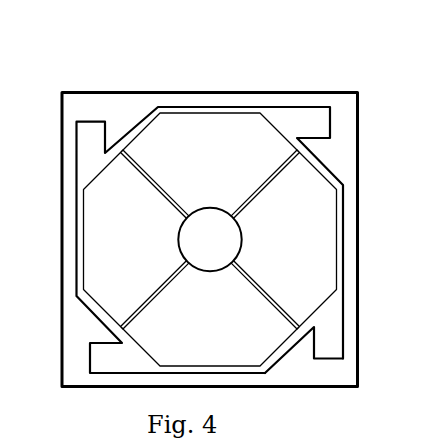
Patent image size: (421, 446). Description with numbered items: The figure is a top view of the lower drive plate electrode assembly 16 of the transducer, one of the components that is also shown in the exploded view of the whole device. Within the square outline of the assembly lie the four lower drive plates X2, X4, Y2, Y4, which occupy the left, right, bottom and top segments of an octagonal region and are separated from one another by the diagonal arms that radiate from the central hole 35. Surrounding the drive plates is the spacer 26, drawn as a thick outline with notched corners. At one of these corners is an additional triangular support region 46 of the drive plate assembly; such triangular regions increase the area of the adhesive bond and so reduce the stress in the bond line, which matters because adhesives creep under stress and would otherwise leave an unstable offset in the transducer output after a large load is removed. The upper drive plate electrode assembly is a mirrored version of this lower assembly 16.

The lower drive plate electrode assembly 16 is at (231, 76).
The spacer 26 is at (350, 218).
The hole 35 is at (212, 272).
The additional triangular support region 46 is at (303, 345).
The lower drive plate X2 is at (107, 257).
The lower drive plate X4 is at (315, 200).
The lower drive plate Y2 is at (155, 340).
The lower drive plate Y4 is at (202, 130).